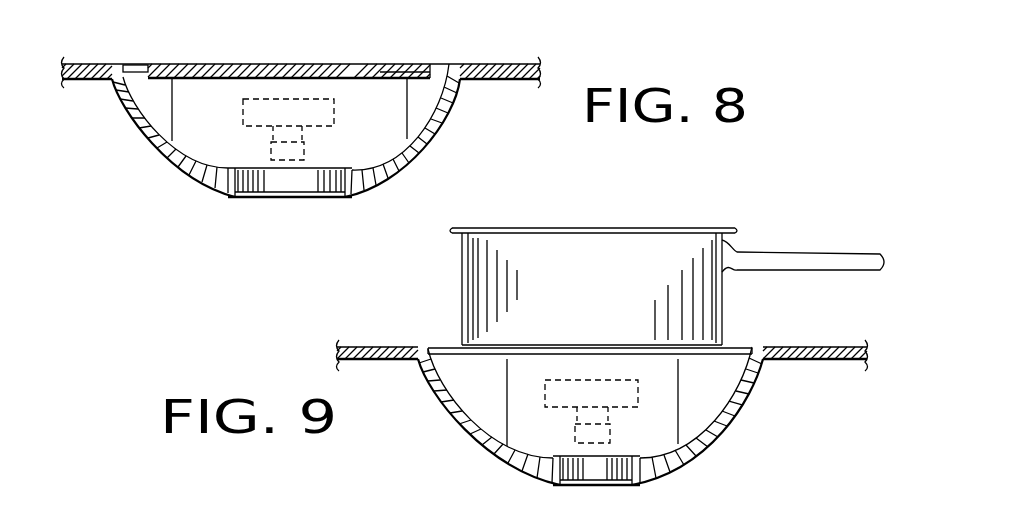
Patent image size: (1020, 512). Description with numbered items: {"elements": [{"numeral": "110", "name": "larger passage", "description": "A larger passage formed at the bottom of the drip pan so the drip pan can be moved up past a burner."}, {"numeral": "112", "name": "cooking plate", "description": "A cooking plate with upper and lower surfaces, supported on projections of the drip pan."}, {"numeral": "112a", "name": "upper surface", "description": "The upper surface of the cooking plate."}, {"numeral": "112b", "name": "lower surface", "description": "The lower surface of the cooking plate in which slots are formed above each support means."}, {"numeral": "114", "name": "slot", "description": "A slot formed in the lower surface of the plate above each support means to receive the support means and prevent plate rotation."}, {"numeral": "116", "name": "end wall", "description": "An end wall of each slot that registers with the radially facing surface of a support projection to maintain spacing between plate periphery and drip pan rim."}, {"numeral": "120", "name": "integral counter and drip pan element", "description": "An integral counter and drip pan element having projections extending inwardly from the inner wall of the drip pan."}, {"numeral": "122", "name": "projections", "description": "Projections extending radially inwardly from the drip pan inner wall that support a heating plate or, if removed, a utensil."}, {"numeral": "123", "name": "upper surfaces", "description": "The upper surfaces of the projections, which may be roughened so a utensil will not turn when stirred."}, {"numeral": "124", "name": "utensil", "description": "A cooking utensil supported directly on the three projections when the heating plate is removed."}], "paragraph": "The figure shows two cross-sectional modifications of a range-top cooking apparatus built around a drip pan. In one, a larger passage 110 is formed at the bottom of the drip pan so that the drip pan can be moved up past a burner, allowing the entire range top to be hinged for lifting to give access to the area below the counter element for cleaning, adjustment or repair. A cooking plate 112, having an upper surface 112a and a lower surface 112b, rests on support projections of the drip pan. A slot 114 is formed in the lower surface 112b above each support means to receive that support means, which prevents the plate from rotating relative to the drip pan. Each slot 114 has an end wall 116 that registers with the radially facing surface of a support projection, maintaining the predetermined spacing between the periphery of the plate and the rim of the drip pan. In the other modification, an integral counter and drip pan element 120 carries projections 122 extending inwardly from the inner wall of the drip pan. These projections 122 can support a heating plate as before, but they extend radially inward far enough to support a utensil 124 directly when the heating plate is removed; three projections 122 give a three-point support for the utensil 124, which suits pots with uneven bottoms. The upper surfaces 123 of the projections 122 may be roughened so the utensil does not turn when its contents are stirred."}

In FIG. 8, the heating unit bottom / drain element 110 is at (326, 197).
In FIG. 8, the countertop 112 is at (222, 64).
In FIG. 8, the cover plate section 112a is at (313, 64).
In FIG. 8, the cover plate section 112b is at (381, 85).
In FIG. 8, the sink bowl 114 is at (442, 124).
In FIG. 8, the heating element 116 is at (400, 80).
In FIG. 9, the countertop 120 is at (398, 347).
In FIG. 9, the sink bowl 122 is at (482, 396).
In FIG. 9, the cover plate 123 is at (444, 347).
In FIG. 9, the cooking pot 124 is at (462, 273).